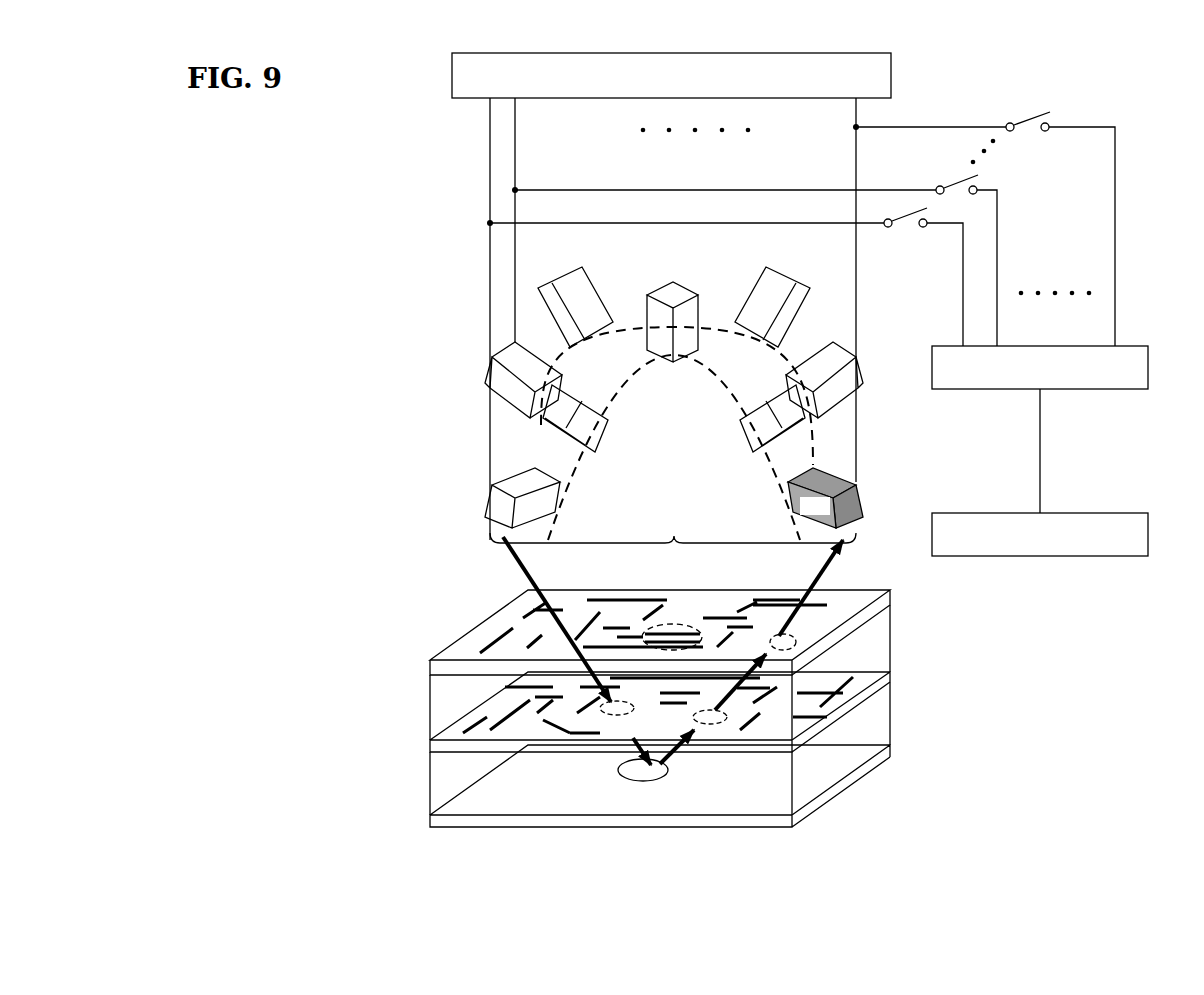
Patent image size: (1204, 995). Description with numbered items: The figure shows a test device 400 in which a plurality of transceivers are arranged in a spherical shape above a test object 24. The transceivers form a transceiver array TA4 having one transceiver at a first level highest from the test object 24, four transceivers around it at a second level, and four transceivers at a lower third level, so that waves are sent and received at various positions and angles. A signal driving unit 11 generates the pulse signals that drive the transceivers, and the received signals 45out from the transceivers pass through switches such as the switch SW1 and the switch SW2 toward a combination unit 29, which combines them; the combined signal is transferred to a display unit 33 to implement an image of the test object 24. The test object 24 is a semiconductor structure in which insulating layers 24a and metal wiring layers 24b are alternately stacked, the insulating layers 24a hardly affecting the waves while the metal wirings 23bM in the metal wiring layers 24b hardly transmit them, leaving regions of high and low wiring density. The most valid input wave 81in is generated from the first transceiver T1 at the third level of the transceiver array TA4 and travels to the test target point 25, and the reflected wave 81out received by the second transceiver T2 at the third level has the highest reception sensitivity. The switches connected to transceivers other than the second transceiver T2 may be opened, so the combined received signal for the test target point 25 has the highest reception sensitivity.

The signal driving unit 11 is at (891, 73).
The combination unit 29 is at (1132, 346).
The display unit 33 is at (1132, 513).
The test device 400 is at (437, 120).
The received signals 45out is at (633, 223).
The switch SW1 is at (923, 277).
The switch SW2 is at (985, 229).
The first transceiver T1 is at (522, 498).
The second transceiver T2 is at (825, 498).
The transceiver array TA4 is at (673, 552).
The metal wirings 23bM is at (595, 600).
The test object 24 is at (367, 662).
The insulating layers 24a is at (428, 706).
The metal wiring layers 24b is at (428, 666).
The test target point 25 is at (668, 772).
The input wave 81in is at (527, 569).
The reflected wave 81out is at (822, 569).